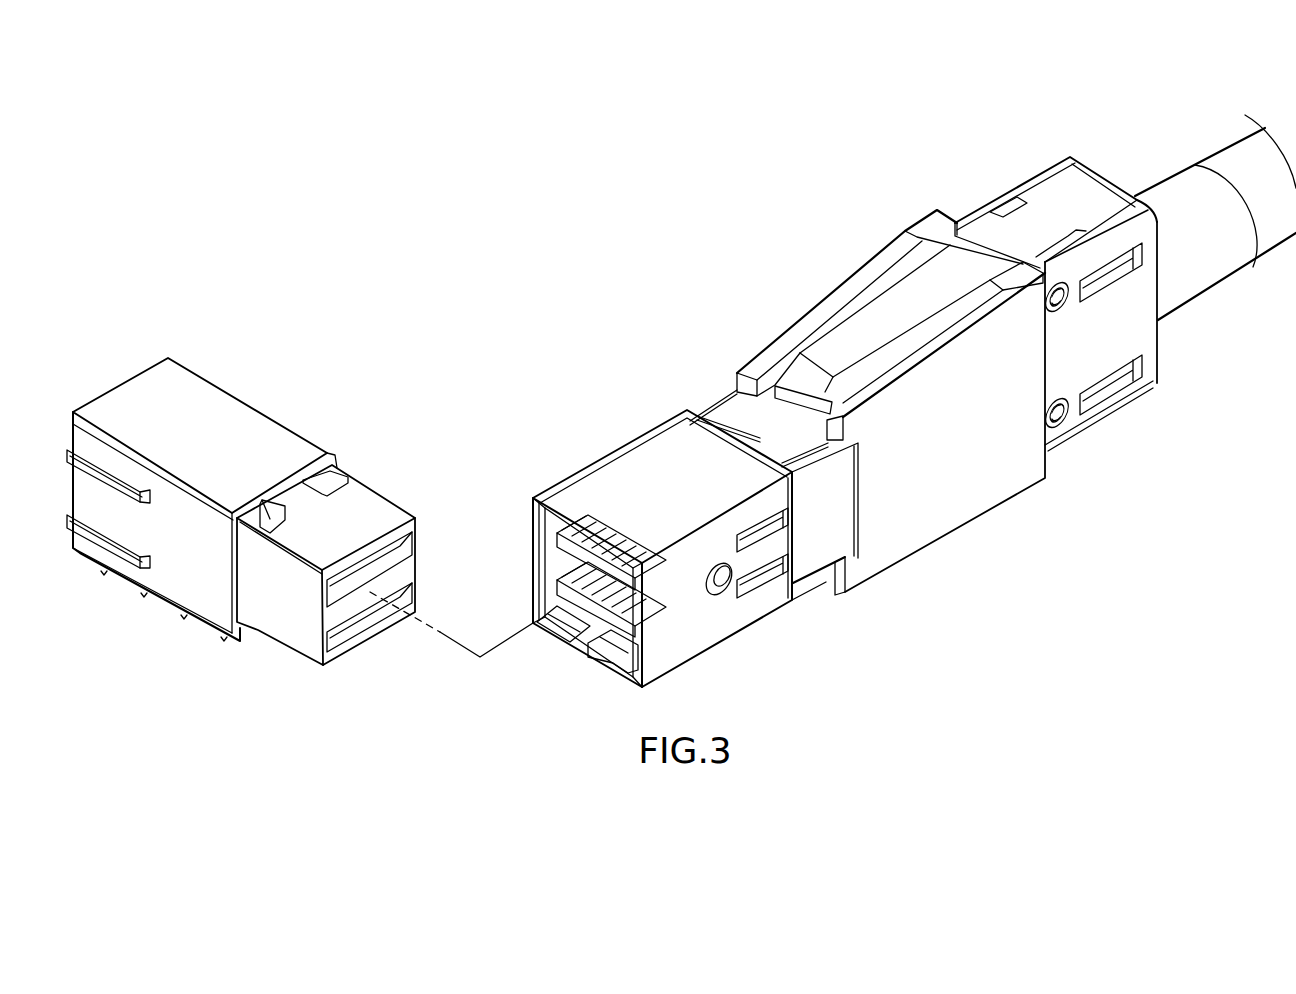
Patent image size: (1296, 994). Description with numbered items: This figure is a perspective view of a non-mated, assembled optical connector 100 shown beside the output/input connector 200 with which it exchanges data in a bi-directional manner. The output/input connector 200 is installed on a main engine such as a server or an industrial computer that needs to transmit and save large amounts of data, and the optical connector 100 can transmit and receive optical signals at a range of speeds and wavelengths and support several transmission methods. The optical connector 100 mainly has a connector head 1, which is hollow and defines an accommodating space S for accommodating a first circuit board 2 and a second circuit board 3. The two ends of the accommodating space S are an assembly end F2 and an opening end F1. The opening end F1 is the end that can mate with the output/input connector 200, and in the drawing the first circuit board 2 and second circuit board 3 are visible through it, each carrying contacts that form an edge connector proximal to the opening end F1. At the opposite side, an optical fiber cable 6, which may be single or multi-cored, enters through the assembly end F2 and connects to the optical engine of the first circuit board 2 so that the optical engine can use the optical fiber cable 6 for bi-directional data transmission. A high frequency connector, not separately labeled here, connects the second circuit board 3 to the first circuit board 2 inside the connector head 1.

The output/input connector 200 is at (284, 363).
The optical connector 100 is at (793, 238).
The connector head 1 is at (810, 323).
The first circuit board 2 is at (540, 533).
The second circuit board 3 is at (586, 617).
The accommodating space S is at (616, 640).
The opening end F1 is at (526, 557).
The assembly end F2 is at (1091, 167).
The optical fiber cable 6 is at (1243, 168).